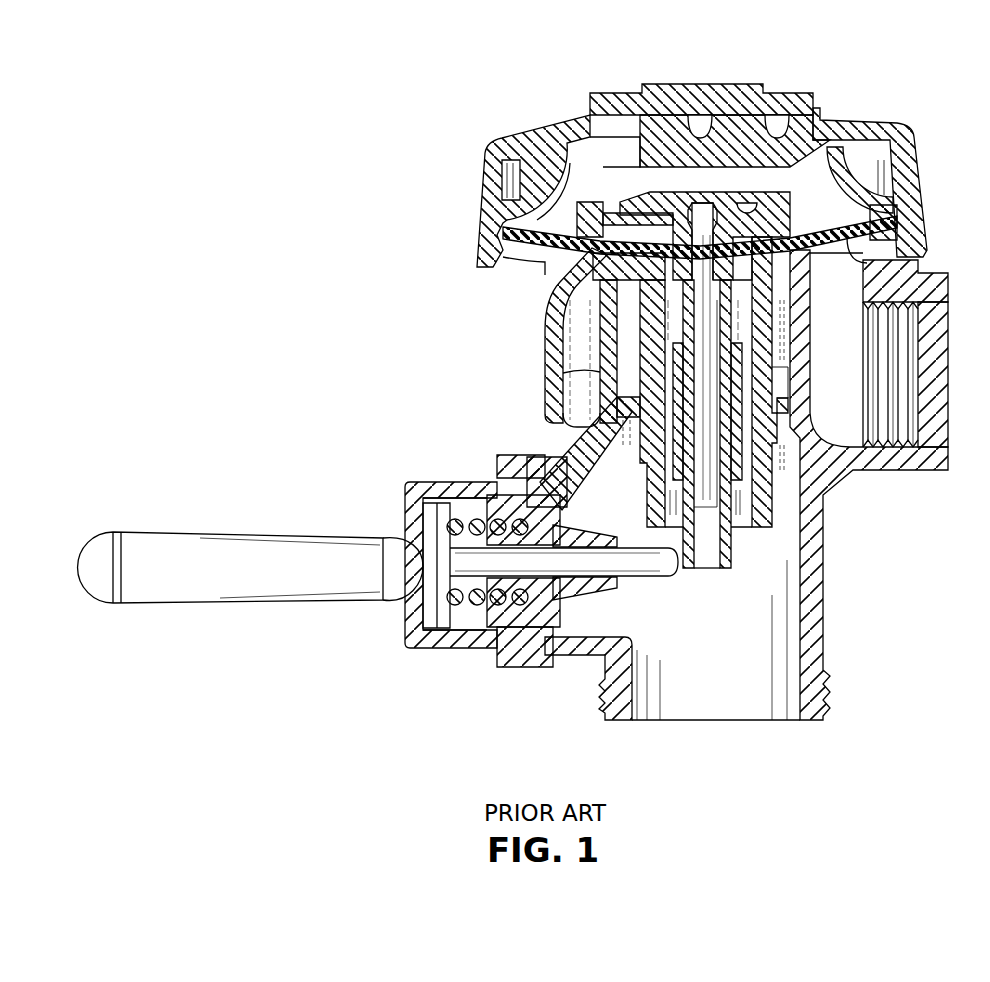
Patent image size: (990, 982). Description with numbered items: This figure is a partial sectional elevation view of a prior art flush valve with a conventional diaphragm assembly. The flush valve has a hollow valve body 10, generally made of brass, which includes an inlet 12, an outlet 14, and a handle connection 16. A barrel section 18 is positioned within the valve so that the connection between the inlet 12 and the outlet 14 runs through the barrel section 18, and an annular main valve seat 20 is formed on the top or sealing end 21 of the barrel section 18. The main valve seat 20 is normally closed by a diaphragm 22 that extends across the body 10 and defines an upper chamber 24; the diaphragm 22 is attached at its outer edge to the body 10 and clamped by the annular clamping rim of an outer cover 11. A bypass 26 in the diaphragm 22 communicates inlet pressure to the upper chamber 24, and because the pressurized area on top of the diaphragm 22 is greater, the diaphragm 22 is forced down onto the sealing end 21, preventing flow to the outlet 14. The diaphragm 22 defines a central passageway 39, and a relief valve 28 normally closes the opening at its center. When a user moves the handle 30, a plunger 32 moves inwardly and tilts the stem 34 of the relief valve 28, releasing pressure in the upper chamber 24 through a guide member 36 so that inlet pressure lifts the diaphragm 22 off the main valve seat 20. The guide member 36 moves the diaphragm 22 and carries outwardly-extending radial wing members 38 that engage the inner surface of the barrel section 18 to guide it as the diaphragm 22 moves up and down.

The valve body 10 is at (833, 634).
The outer cover 11 is at (498, 222).
The inlet 12 is at (912, 370).
The outlet 14 is at (752, 715).
The handle connection 16 is at (568, 660).
The barrel section 18 is at (600, 375).
The annular main valve seat 20 is at (822, 263).
The sealing end 21 is at (583, 266).
The diaphragm 22 is at (913, 245).
The upper chamber 24 is at (597, 180).
The bypass 26 is at (542, 265).
The relief valve 28 is at (758, 190).
The handle 30 is at (210, 535).
The plunger 32 is at (657, 565).
The stem 34 is at (737, 568).
The guide member 36 is at (640, 481).
The radial wing members 38 is at (780, 432).
The central passageway 39 is at (640, 222).